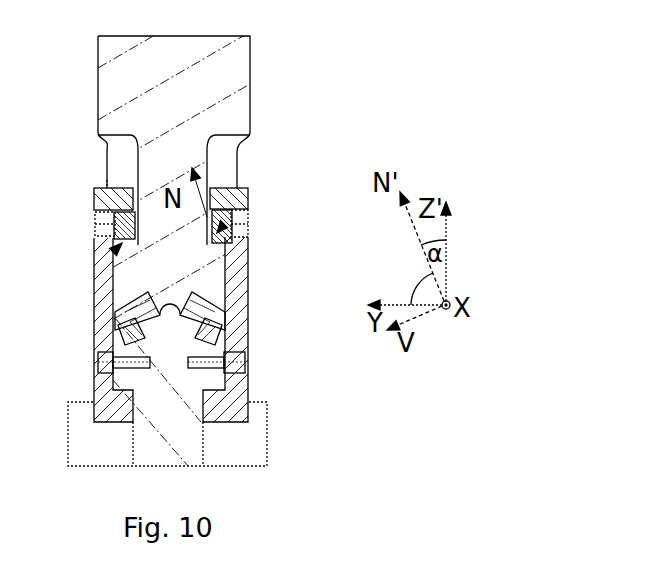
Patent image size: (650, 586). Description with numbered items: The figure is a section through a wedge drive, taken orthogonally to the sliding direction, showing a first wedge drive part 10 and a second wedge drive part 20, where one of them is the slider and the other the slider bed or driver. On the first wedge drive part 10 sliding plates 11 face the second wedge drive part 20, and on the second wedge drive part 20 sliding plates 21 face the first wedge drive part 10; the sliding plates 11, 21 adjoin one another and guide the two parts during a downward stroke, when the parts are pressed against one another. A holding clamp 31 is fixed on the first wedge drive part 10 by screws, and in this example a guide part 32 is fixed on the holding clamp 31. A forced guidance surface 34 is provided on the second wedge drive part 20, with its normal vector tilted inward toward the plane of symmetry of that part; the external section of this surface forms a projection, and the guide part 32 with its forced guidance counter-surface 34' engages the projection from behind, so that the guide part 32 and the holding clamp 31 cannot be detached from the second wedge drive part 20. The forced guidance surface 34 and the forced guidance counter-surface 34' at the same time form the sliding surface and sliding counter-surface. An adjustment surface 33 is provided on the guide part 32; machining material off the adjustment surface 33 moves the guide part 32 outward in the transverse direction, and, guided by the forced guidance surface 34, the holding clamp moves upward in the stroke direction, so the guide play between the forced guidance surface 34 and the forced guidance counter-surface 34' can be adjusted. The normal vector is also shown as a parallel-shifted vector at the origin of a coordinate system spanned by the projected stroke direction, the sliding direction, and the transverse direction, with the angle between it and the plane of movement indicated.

The first wedge drive part 10 is at (188, 462).
The sliding plates 11 is at (118, 340).
The second wedge drive part 20 is at (243, 106).
The sliding plates 21 is at (116, 325).
The holding clamp 31 is at (95, 384).
The guide part 32 is at (95, 225).
The adjustment surface 33 is at (96, 208).
The forced guidance surface 34 is at (260, 203).
The forced guidance counter-surface 34' is at (131, 243).